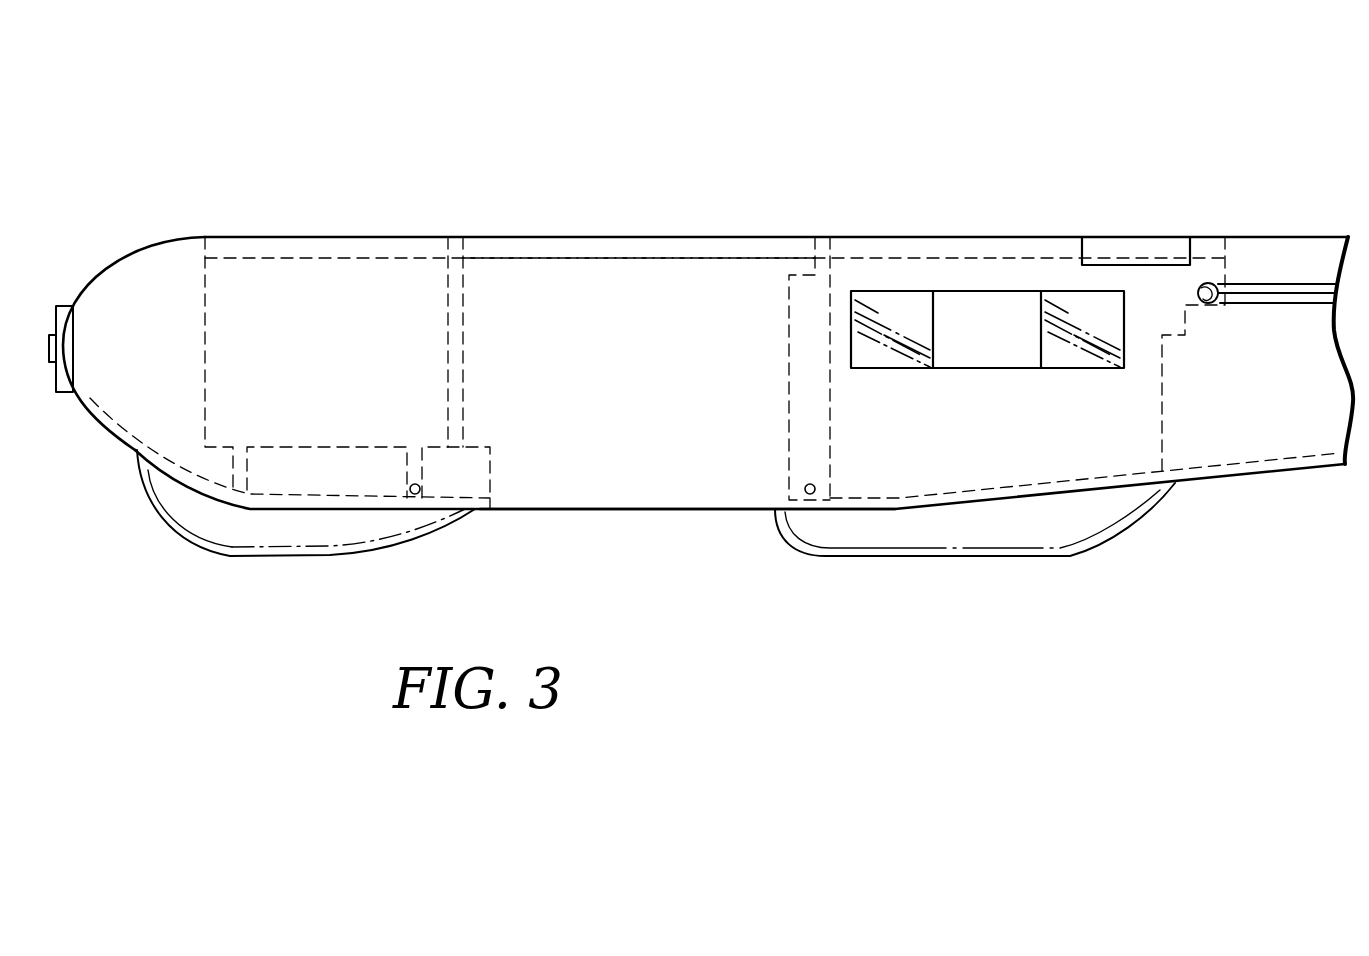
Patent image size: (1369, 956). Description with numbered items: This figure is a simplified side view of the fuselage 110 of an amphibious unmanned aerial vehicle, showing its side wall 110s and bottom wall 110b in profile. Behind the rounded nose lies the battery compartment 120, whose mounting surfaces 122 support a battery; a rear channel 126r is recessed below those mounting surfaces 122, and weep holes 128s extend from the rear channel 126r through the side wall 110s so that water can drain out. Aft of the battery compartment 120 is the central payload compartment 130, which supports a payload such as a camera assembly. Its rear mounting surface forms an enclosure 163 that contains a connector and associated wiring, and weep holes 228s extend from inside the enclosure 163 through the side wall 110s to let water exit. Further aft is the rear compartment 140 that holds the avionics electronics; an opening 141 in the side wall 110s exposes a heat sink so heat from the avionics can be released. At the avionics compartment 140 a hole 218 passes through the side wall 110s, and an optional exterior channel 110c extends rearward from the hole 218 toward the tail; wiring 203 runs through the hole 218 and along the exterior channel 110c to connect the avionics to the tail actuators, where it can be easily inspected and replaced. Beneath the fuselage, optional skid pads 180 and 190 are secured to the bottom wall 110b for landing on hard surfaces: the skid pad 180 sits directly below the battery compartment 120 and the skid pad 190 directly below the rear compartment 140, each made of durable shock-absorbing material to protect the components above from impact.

The fuselage 110 is at (1064, 236).
The bottom wall 110b is at (677, 512).
The exterior channel 110c is at (1288, 300).
The side wall 110s is at (626, 477).
The battery compartment 120 is at (313, 260).
The mounting surfaces 122 is at (268, 445).
The rear channel 126r is at (409, 458).
The weep holes 128s is at (417, 494).
The central payload compartment 130 is at (600, 260).
The rear compartment 140 is at (936, 260).
The opening 141 is at (990, 308).
The enclosure 163 is at (802, 395).
The skid pad 180 is at (228, 528).
The skid pad 190 is at (1025, 530).
The wiring 203 is at (1255, 297).
The hole 218 is at (1200, 297).
The weep holes 228s is at (813, 494).